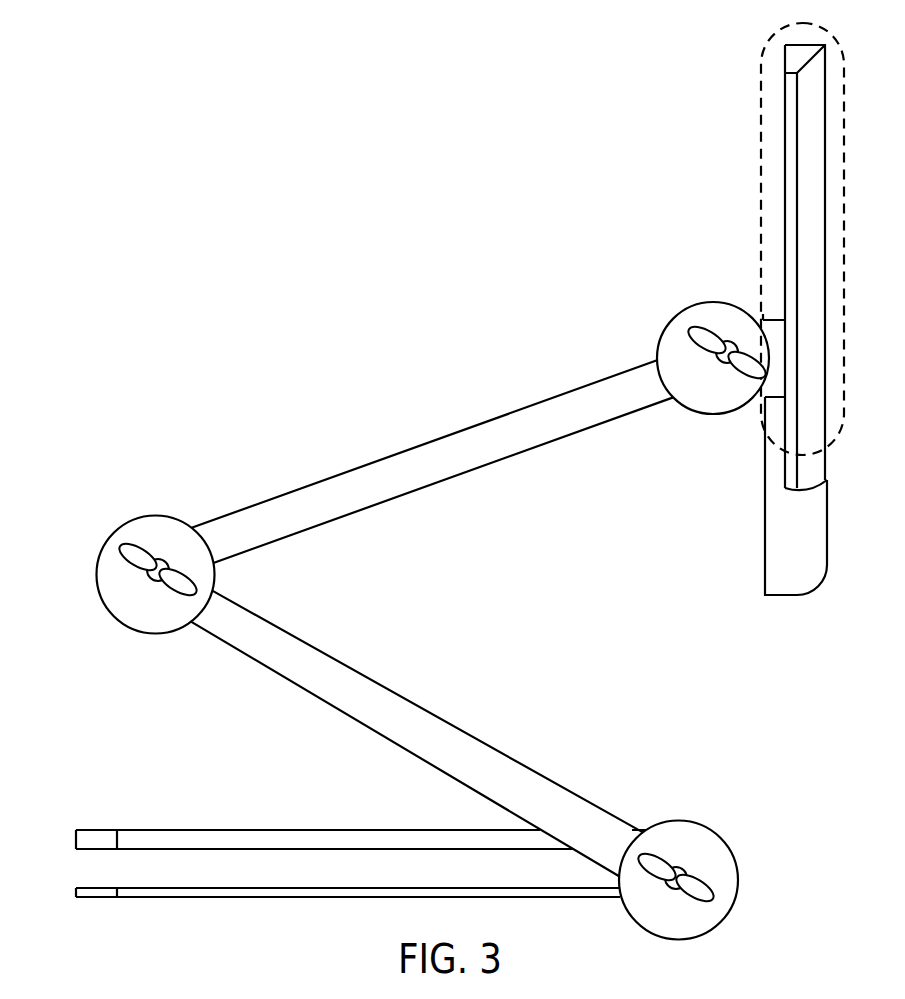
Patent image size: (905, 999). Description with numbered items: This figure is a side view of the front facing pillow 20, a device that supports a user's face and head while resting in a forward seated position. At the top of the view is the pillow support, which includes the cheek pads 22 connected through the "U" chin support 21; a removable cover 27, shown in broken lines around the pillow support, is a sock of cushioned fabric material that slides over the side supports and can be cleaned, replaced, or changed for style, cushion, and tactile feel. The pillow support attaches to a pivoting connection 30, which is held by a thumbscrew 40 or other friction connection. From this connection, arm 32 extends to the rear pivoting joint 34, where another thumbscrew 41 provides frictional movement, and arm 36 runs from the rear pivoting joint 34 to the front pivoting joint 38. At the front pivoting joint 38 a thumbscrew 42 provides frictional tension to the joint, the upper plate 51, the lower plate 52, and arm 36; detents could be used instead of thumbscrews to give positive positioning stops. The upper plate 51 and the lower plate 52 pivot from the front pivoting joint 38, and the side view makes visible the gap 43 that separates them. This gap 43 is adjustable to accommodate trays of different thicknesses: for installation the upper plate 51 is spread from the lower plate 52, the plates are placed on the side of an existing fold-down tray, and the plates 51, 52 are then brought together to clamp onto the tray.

The front facing pillow 20 is at (412, 329).
The lower "U" chin support 21 is at (765, 507).
The cheek pad 22 is at (785, 162).
The cover 27 is at (760, 77).
The pivoting connection 30 is at (711, 353).
The arm 32 is at (520, 450).
The rear pivoting joint 34 is at (142, 571).
The arm 36 is at (503, 755).
The front pivoting joint 38 is at (668, 879).
The thumbscrew 40 is at (708, 358).
The thumbscrew 41 is at (140, 570).
The thumbscrew 42 is at (657, 878).
The gap 43 is at (324, 869).
The upper plate 51 is at (287, 828).
The lower plate 52 is at (285, 897).